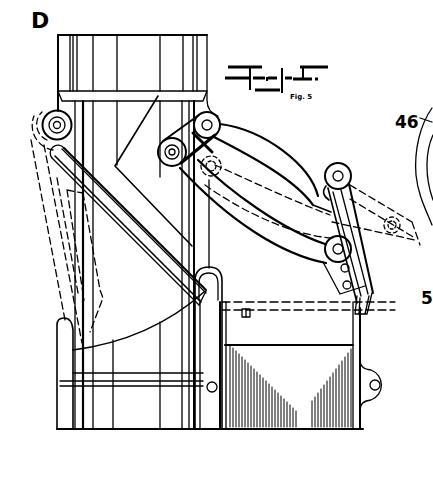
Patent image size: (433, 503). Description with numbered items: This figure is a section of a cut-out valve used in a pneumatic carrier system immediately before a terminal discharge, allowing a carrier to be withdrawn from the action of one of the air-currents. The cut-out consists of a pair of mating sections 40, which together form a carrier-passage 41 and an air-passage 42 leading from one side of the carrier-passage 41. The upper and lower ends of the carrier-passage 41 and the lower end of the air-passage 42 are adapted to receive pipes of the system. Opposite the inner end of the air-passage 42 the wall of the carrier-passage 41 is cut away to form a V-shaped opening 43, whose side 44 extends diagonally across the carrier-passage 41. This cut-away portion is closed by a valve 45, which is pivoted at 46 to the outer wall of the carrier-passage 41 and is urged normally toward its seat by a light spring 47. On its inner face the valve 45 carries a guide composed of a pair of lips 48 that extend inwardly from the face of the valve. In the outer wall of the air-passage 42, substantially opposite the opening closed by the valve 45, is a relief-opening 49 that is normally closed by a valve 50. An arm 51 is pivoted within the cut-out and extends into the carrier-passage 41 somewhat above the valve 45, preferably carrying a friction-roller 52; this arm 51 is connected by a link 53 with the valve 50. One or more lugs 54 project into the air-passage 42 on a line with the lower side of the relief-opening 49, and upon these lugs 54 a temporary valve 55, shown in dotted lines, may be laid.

The mating sections 40 is at (64, 89).
The carrier-passage 41 is at (172, 57).
The air-passage 42 is at (307, 365).
The V-shaped opening 43 is at (105, 310).
The side of V-shaped opening 44 is at (97, 172).
The valve 45 is at (167, 251).
The pivot 46 is at (54, 122).
The light spring 47 is at (45, 172).
The lips 48 is at (135, 203).
The relief-opening 49 is at (308, 173).
The valve 50 is at (343, 218).
The arm 51 is at (226, 172).
The friction-roller 52 is at (172, 139).
The link 53 is at (289, 245).
The lugs 54 is at (249, 317).
The temporary valve 55 is at (384, 301).